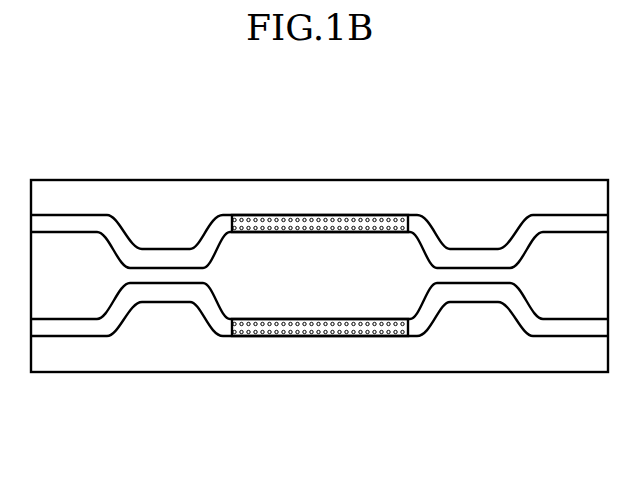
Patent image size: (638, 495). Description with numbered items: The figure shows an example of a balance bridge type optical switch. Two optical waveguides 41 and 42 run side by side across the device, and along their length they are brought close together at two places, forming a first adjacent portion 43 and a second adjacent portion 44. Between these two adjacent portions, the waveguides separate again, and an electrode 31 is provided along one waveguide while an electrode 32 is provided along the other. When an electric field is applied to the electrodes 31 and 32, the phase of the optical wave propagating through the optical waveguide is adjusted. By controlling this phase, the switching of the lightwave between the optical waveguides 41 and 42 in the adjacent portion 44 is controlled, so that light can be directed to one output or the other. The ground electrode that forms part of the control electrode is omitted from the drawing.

The electrode 31 is at (320, 223).
The electrode 32 is at (322, 328).
The optical waveguide 41 is at (73, 225).
The optical waveguide 42 is at (68, 327).
The adjacent portion 43 is at (177, 229).
The adjacent portion 44 is at (482, 227).